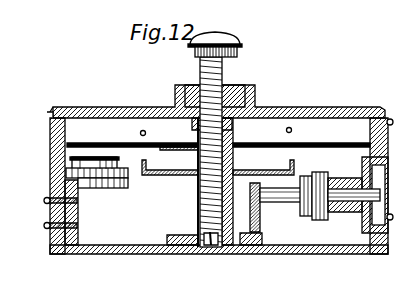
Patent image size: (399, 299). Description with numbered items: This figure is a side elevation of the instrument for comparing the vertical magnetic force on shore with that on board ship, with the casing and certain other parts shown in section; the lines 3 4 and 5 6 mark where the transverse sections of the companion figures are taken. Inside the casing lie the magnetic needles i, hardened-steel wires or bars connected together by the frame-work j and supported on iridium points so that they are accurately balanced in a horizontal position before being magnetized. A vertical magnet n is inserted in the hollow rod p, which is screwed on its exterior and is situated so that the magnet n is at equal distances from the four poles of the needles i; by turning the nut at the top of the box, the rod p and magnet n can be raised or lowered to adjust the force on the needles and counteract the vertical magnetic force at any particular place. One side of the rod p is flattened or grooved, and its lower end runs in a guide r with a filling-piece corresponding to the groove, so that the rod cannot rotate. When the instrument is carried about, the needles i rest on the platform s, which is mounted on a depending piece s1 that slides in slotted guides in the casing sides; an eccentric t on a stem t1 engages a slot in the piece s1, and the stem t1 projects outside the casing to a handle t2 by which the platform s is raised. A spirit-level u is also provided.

The section line 3 4 3 is at (212, 32).
The hollow rod p is at (230, 67).
The section line 5 6 5 is at (294, 106).
The magnetic needles i is at (218, 138).
The frame-work j is at (180, 145).
The platform s is at (222, 166).
The depending piece s1 is at (263, 231).
The spirit-level u is at (97, 180).
The guide r is at (197, 200).
The eccentric t is at (262, 208).
The stem t1 is at (305, 196).
The handle t2 is at (355, 195).
The vertical magnet n is at (210, 250).
The section line 3 4 is at (222, 256).
The section line 5 6 is at (300, 255).